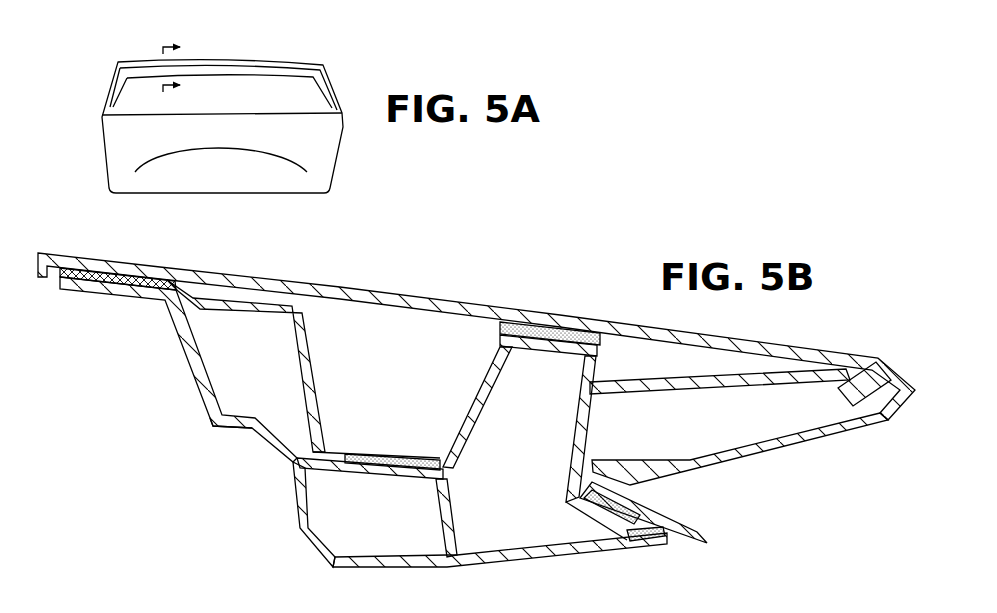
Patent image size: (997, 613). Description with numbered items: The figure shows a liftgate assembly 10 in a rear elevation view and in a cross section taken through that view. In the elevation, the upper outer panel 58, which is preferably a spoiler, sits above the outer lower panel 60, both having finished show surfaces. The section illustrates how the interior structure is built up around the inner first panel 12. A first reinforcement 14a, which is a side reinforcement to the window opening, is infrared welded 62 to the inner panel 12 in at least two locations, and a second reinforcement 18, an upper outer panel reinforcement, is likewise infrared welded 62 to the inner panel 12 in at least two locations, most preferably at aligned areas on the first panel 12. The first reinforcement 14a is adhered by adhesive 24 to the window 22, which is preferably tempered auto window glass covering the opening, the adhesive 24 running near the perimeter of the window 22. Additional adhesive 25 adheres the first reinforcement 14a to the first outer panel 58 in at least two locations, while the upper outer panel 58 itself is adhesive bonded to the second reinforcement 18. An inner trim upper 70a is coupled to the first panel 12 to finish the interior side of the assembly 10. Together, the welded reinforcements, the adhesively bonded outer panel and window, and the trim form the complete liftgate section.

In FIG. 5A, the liftgate assembly 10 is at (366, 67).
In FIG. 5A, the first outer panel 58 is at (135, 68).
In FIG. 5B, the first outer panel 58 is at (440, 295).
In FIG. 5A, the second outer panel 60 is at (317, 182).
In FIG. 5B, the infrared welding location 62 is at (100, 283).
In FIG. 5B, the first panel 12 is at (193, 390).
In FIG. 5B, the first reinforcement 14a is at (200, 363).
In FIG. 5B, the second reinforcement 18 is at (303, 323).
In FIG. 5B, the additional adhesive 25 is at (560, 320).
In FIG. 5B, the adhesive 24 is at (620, 497).
In FIG. 5B, the window 22 is at (703, 530).
In FIG. 5B, the inner trim upper 70a is at (307, 553).